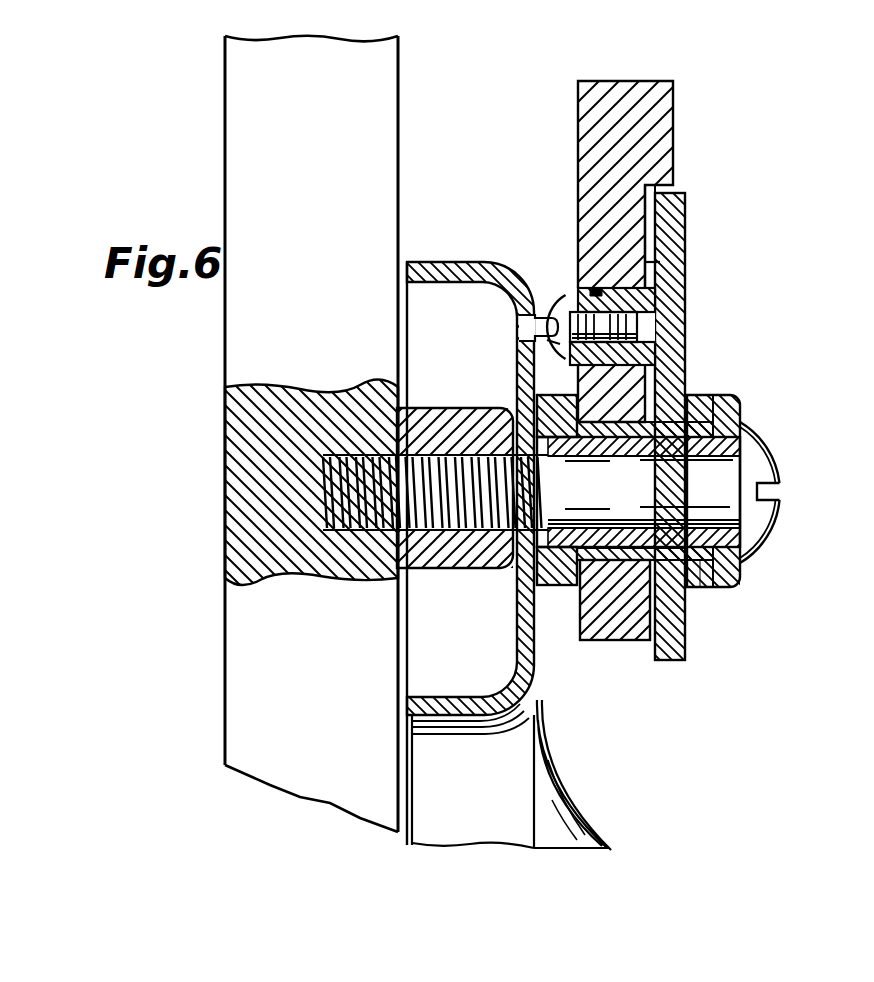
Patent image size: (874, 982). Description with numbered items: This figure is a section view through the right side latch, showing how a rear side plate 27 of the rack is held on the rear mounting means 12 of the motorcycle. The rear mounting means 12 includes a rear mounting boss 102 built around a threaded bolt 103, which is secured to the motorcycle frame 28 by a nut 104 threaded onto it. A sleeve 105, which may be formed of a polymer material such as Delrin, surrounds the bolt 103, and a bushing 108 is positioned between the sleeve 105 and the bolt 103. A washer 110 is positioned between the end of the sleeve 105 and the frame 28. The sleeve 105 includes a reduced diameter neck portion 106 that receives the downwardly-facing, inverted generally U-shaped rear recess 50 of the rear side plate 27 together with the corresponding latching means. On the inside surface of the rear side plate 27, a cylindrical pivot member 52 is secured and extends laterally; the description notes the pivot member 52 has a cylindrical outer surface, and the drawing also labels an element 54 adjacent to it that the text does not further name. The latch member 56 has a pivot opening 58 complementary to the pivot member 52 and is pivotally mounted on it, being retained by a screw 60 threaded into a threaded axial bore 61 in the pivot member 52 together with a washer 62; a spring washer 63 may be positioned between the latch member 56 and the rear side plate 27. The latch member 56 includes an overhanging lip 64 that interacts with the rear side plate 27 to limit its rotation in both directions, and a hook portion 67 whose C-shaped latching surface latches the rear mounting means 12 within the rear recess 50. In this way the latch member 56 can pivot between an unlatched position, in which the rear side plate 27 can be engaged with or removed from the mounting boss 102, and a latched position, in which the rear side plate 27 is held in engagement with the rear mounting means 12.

The rear mounting means 12 is at (553, 184).
The rear side plate 27 is at (681, 215).
The frame 28 is at (224, 324).
The rear recess 50 is at (756, 491).
The pivot member 52 is at (640, 355).
The retainer 54 is at (650, 320).
The latch member 56 is at (668, 108).
The pivot opening 58 is at (596, 290).
The screw 60 is at (516, 317).
The threaded axial bore 61 is at (567, 338).
The washer 62 is at (574, 275).
The spring washer 63 is at (655, 265).
The overhanging lip 64 is at (655, 190).
The hook portion 67 is at (587, 641).
The rear mounting boss 102 is at (767, 408).
The threaded bolt 103 is at (758, 452).
The nut 104 is at (448, 552).
The sleeve 105 is at (700, 402).
The neck portion 106 is at (633, 558).
The bushing 108 is at (738, 577).
The washer 110 is at (536, 617).